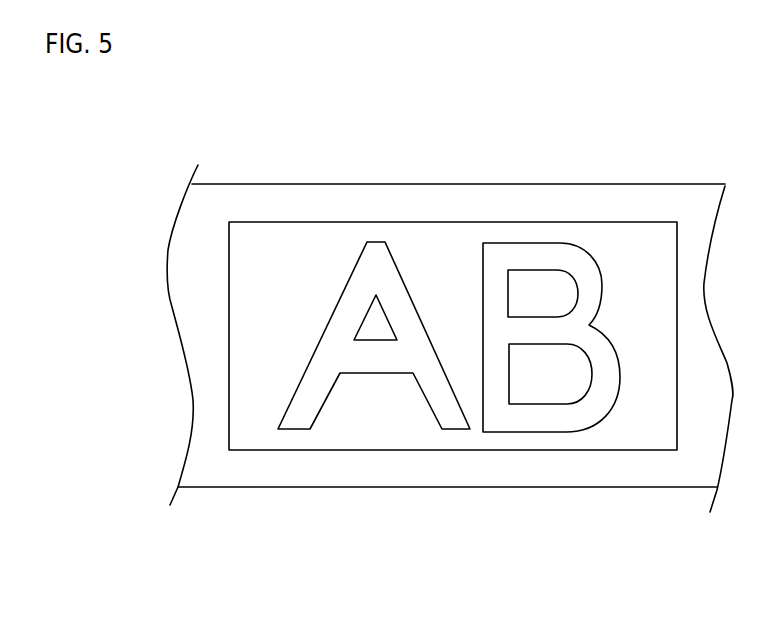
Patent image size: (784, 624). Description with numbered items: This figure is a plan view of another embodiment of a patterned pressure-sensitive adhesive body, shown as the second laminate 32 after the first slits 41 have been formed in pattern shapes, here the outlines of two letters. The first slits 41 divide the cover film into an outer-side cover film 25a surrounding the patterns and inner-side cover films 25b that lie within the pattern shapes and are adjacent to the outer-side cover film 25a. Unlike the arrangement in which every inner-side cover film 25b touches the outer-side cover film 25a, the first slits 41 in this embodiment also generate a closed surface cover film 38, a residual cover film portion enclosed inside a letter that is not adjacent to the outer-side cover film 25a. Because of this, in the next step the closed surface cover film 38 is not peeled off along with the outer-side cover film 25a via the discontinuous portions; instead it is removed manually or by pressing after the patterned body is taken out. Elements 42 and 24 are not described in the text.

The second laminate 32 is at (372, 621).
The outer-side cover film 25a is at (518, 203).
The inner-side cover film 25b is at (612, 248).
The print region frame 42 is at (283, 218).
The characters 24 is at (557, 257).
The closed surface cover film 38 is at (372, 325).
The first slits 41 is at (388, 318).